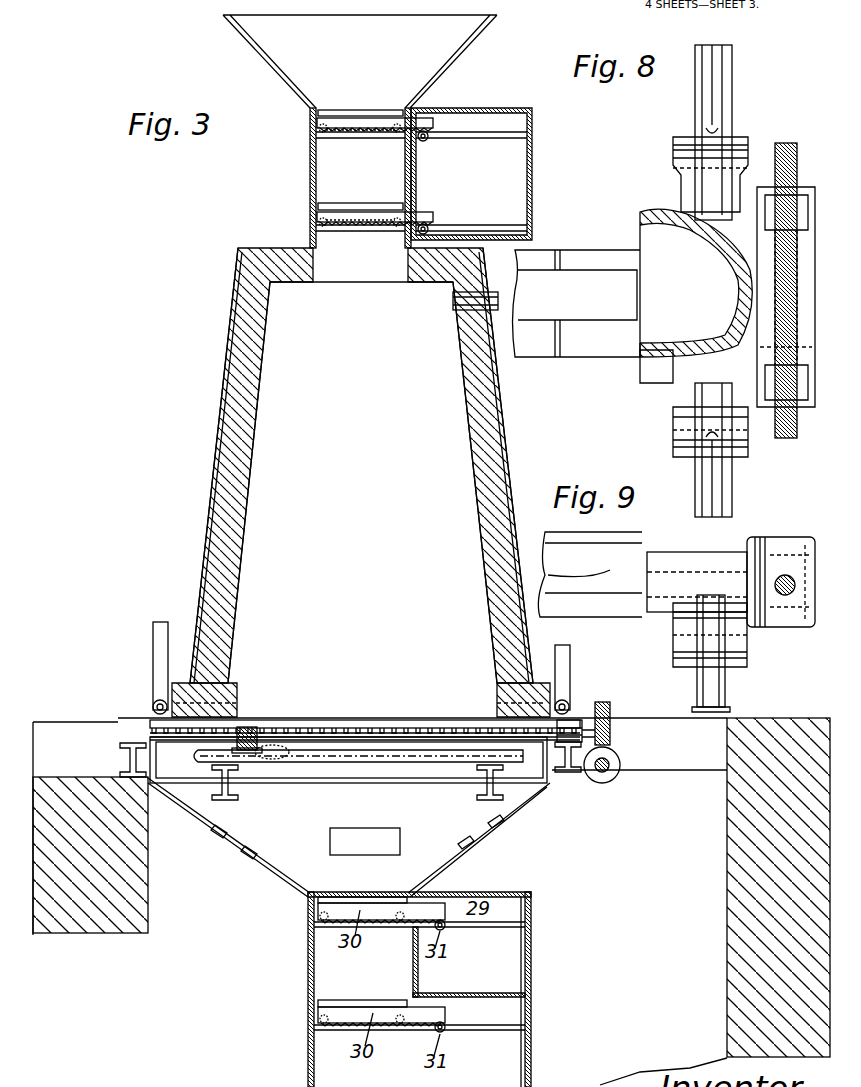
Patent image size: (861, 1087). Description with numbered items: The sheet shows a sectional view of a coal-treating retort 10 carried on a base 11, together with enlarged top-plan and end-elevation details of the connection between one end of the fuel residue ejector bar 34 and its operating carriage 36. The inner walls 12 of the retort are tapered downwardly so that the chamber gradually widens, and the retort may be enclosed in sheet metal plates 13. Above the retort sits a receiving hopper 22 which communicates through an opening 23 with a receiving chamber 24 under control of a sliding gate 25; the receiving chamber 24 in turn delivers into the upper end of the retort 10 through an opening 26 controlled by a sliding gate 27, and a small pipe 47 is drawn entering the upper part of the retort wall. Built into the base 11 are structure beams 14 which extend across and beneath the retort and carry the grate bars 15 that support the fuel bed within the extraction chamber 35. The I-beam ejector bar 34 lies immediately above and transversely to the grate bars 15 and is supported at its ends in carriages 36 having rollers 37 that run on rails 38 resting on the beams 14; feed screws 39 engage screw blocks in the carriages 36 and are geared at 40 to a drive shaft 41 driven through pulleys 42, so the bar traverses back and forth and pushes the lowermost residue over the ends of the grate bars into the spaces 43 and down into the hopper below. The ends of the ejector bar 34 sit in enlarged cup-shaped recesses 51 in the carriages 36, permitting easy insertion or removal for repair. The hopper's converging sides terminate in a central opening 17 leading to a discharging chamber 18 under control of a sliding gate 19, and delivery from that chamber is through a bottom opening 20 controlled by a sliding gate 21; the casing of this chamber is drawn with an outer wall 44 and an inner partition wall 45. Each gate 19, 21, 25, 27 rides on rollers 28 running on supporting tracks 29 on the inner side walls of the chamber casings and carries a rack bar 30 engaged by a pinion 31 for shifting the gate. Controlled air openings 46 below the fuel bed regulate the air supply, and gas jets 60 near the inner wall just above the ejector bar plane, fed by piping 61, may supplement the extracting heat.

In FIG. 3, the retort 10 is at (230, 378).
In FIG. 3, the base 11 is at (148, 912).
In FIG. 3, the inner walls 12 is at (254, 452).
In FIG. 3, the sheet metal plates 13 is at (222, 365).
In FIG. 3, the beams 14 is at (128, 752).
In FIG. 3, the grate bars 15 is at (386, 766).
In FIG. 3, the central opening 17 is at (335, 897).
In FIG. 3, the discharging chamber 18 is at (314, 976).
In FIG. 3, the sliding gate 19 is at (386, 897).
In FIG. 3, the opening 20 is at (354, 1000).
In FIG. 3, the sliding gate 21 is at (390, 1000).
In FIG. 3, the receiving hopper 22 is at (268, 68).
In FIG. 3, the opening 23 is at (336, 110).
In FIG. 3, the receiving chamber 24 is at (318, 190).
In FIG. 3, the sliding gate 25 is at (376, 115).
In FIG. 3, the opening 26 is at (349, 210).
In FIG. 3, the sliding gate 27 is at (384, 212).
In FIG. 3, the rollers 28 is at (322, 138).
In FIG. 3, the supporting tracks 29 is at (471, 174).
In FIG. 3, the rack bar 30 is at (368, 128).
In FIG. 3, the pinion 31 is at (420, 146).
In FIG. 3, the ejector bar 34 is at (260, 738).
In FIG. 8, the ejector bar 34 is at (577, 303).
In FIG. 9, the ejector bar 34 is at (590, 574).
In FIG. 3, the extraction chamber 35 is at (361, 389).
In FIG. 8, the carriages 36 is at (668, 396).
In FIG. 9, the carriages 36 is at (684, 566).
In FIG. 3, the rollers 37 is at (240, 727).
In FIG. 8, the rollers 37 is at (697, 124).
In FIG. 9, the rollers 37 is at (697, 683).
In FIG. 8, the tracks or rails 38 is at (724, 104).
In FIG. 9, the tracks or rails 38 is at (716, 696).
In FIG. 3, the feed screws 39 is at (390, 730).
In FIG. 8, the feed screws 39 is at (791, 145).
In FIG. 9, the feed screws 39 is at (787, 628).
In FIG. 3, the gearing 40 is at (610, 726).
In FIG. 3, the drive shaft 41 is at (612, 766).
In FIG. 3, the pulleys 42 is at (614, 782).
In FIG. 3, the spaces 43 is at (190, 794).
In FIG. 3, the lower casing outer wall 44 is at (534, 1058).
In FIG. 3, the lower casing partition 45 is at (488, 989).
In FIG. 3, the air openings 46 is at (231, 842).
In FIG. 3, the vent pipe 47 is at (462, 298).
In FIG. 8, the cup-shaped recesses 51 is at (640, 355).
In FIG. 3, the gas jets 60 is at (236, 700).
In FIG. 3, the piping 61 is at (155, 655).